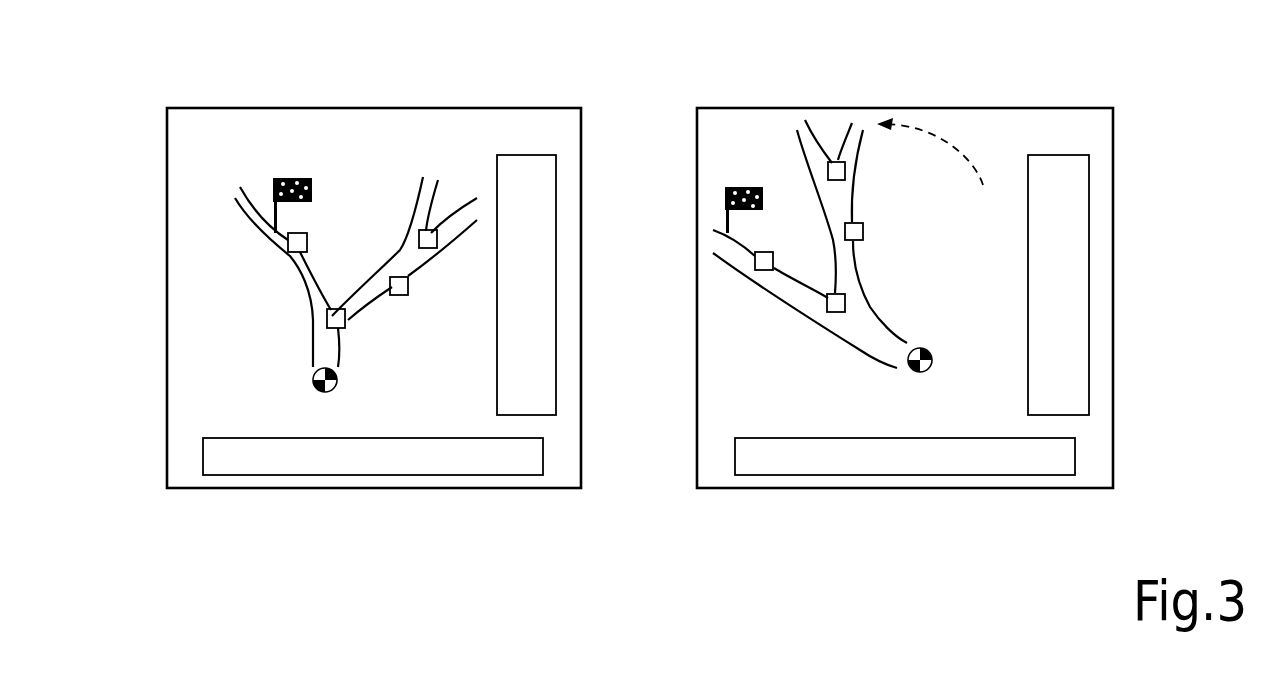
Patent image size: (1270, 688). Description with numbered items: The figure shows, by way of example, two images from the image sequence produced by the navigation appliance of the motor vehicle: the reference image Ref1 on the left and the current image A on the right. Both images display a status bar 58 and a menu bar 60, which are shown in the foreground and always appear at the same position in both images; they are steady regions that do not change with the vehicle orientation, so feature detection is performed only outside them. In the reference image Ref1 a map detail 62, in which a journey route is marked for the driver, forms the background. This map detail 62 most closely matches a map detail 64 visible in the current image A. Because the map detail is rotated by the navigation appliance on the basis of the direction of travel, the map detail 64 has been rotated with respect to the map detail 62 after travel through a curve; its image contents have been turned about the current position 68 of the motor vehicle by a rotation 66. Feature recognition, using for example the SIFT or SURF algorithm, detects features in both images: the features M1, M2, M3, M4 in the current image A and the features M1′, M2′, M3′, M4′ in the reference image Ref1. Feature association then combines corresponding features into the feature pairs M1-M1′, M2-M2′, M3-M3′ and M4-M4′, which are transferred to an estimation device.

The map detail 62 is at (371, 118).
The map detail 64 is at (728, 122).
The rotation 66 is at (942, 140).
The current position 68 is at (926, 347).
The status bar 58 is at (557, 266).
The menu bar 60 is at (531, 475).
The current image A is at (1113, 427).
The reference image Ref1 is at (166, 290).
The feature M1 is at (845, 170).
The feature M2 is at (863, 229).
The feature M3 is at (838, 312).
The feature M4 is at (762, 270).
The feature M1′ is at (430, 248).
The feature M2′ is at (399, 296).
The feature M3′ is at (335, 308).
The feature M4′ is at (290, 252).